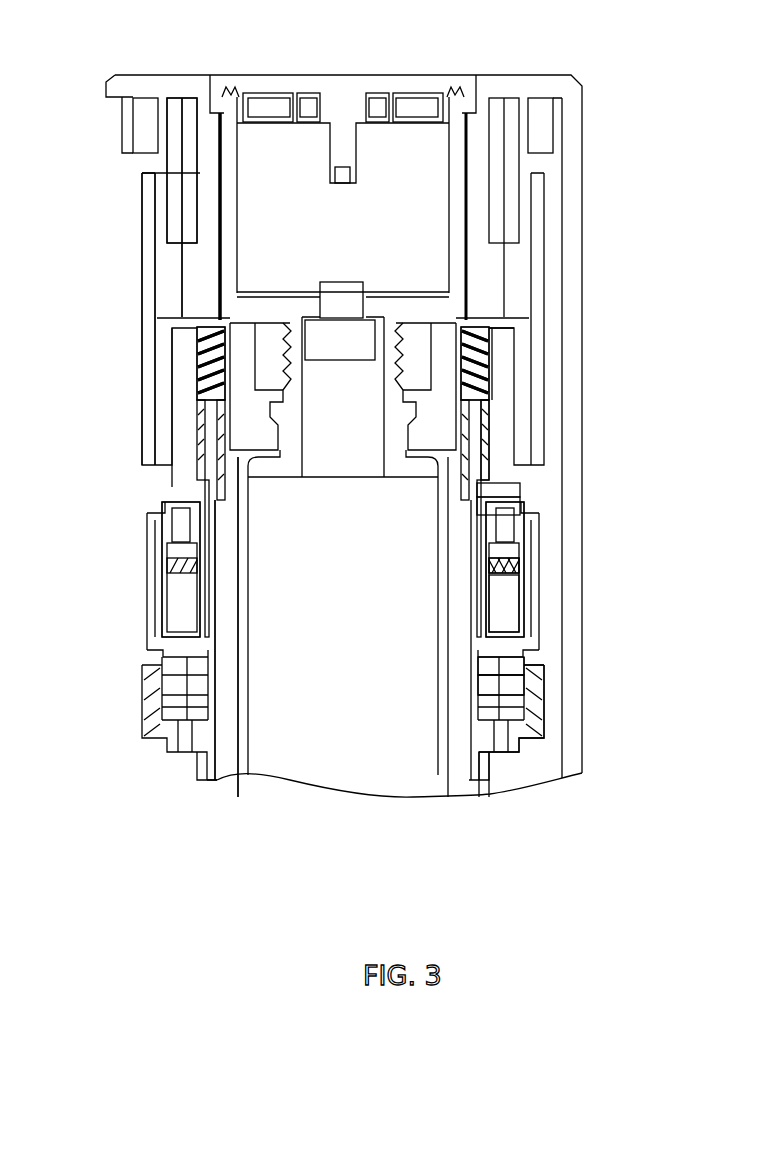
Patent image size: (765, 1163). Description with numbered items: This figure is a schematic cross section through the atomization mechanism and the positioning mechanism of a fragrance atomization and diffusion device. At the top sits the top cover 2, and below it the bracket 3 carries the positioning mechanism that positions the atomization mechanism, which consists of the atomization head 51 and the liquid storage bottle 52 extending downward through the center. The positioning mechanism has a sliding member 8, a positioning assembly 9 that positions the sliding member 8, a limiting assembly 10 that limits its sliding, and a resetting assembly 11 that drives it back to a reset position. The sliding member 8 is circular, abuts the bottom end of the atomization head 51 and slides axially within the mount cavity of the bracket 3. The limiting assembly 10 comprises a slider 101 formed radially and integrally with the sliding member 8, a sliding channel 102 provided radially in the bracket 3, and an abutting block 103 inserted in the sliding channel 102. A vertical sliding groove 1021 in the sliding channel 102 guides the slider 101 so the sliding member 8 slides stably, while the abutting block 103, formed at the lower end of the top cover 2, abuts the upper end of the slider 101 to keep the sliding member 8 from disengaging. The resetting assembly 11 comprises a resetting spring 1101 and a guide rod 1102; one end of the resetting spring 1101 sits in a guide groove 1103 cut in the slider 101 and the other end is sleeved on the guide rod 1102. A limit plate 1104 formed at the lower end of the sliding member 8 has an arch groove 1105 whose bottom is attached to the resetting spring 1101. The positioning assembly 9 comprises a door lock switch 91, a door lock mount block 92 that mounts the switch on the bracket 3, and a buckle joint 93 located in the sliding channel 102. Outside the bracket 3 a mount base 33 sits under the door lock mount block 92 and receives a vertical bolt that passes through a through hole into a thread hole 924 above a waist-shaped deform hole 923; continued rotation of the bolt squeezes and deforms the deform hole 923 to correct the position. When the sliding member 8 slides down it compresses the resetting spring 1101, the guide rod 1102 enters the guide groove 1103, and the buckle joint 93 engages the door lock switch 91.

The top cover 2 is at (168, 88).
The atomization head 51 is at (218, 182).
The limiting assembly 10 is at (72, 243).
The abutting block 103 is at (167, 243).
The sliding channel 102 is at (150, 295).
The slider 101 is at (182, 318).
The sliding member 8 is at (197, 335).
The sliding groove 1021 is at (170, 380).
The bracket 3 is at (162, 518).
The liquid storage bottle 52 is at (247, 775).
The resetting assembly 11 is at (665, 377).
The guide groove 1103 is at (495, 345).
The resetting spring 1101 is at (490, 380).
The guide rod 1102 is at (492, 420).
The limit plate 1104 is at (520, 488).
The arch groove 1105 is at (520, 506).
The positioning assembly 9 is at (630, 613).
The buckle joint 93 is at (522, 560).
The door lock switch 91 is at (522, 600).
The door lock mount block 92 is at (526, 630).
The thread hole 924 is at (526, 665).
The deform hole 923 is at (526, 685).
The mount base 33 is at (546, 705).